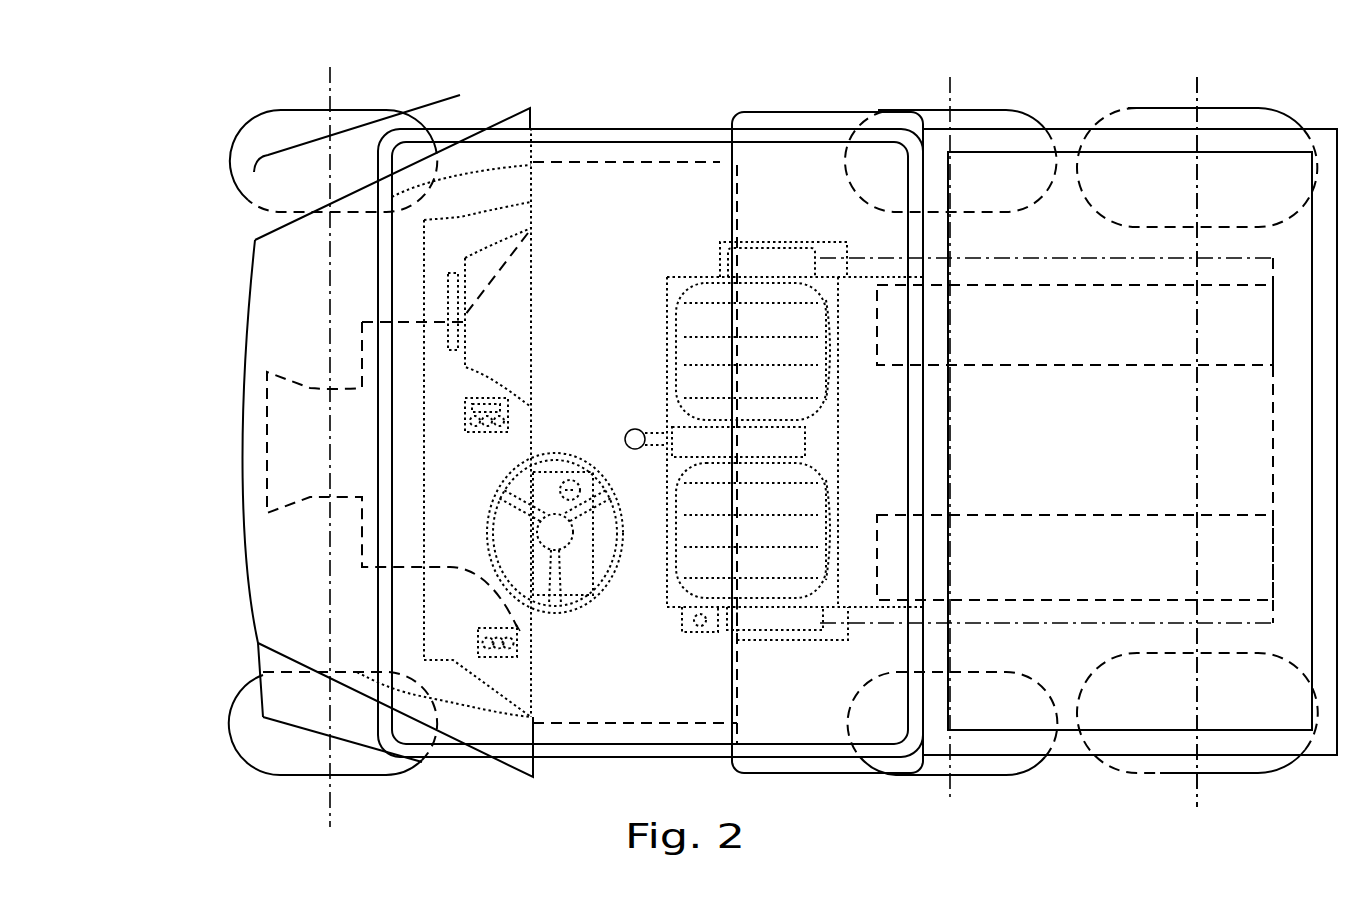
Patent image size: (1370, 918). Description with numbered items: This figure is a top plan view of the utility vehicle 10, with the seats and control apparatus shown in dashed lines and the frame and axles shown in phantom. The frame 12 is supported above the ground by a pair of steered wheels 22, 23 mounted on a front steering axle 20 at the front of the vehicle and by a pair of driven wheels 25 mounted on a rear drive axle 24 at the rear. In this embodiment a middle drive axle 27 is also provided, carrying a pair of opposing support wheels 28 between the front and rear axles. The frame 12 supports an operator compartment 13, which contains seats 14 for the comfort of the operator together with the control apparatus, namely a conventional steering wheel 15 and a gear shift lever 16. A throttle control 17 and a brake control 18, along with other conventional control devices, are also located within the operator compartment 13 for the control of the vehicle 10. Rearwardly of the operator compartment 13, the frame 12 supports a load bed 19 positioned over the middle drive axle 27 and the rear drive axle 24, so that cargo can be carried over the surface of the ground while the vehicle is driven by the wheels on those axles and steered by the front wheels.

The utility vehicle 10 is at (405, 76).
The frame 12 is at (682, 162).
The operator compartment 13 is at (628, 102).
The seats 14 is at (703, 283).
The steering wheel 15 is at (568, 450).
The gear shift lever 16 is at (633, 427).
The throttle control 17 is at (497, 398).
The brake control 18 is at (522, 643).
The load bed 19 is at (1312, 628).
The front steering axle 20 is at (328, 180).
The steered wheel 22 is at (460, 95).
The steered wheel 23 is at (353, 776).
The rear drive axle 24 is at (1197, 183).
The driven wheels 25 is at (1128, 109).
The middle drive axle 27 is at (950, 217).
The support wheels 28 is at (998, 110).